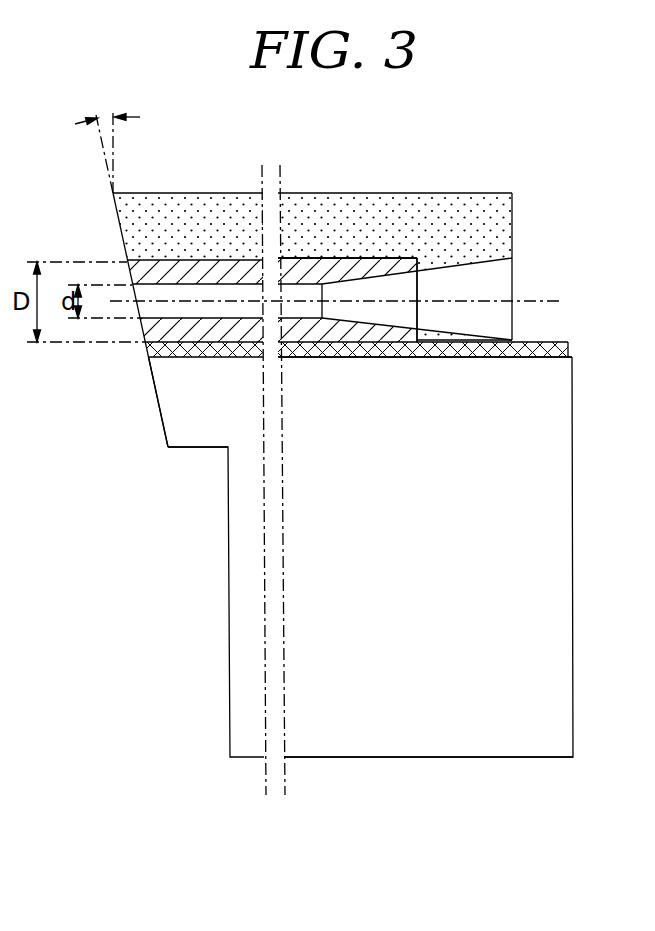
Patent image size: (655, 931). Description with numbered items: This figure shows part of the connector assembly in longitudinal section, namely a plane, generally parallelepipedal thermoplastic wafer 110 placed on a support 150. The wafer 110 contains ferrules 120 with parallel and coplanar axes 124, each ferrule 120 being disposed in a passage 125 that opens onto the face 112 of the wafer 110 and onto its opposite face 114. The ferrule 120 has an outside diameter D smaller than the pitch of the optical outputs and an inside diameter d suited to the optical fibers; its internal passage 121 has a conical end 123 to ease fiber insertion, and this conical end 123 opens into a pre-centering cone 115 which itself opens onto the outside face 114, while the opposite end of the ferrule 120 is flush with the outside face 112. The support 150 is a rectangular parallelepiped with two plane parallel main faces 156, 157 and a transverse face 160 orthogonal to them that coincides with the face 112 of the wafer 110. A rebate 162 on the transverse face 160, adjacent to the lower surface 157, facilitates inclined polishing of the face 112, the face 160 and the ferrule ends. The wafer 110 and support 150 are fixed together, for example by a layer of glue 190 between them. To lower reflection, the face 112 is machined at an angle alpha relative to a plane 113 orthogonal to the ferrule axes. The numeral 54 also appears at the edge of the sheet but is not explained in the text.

The wafer 110 is at (228, 208).
The face of the wafer 112 is at (105, 219).
The plane orthogonal to the ferrule axes 113 is at (113, 137).
The opposite face of the wafer 114 is at (523, 215).
The pre-centering cone 115 is at (483, 265).
The ferrule 120 is at (335, 270).
The internal passage of the ferrule 121 is at (213, 318).
The conical end 123 is at (375, 284).
The axis of the ferrule 124 is at (538, 300).
The passage of the wafer 125 is at (302, 258).
The support 150 is at (366, 695).
The main face of the support 156 is at (547, 352).
The lower surface of the support 157 is at (462, 772).
The transverse face of the support 160 is at (160, 427).
The rebate 162 is at (205, 475).
The layer of glue 190 is at (472, 355).
The element 54 is at (11, 588).